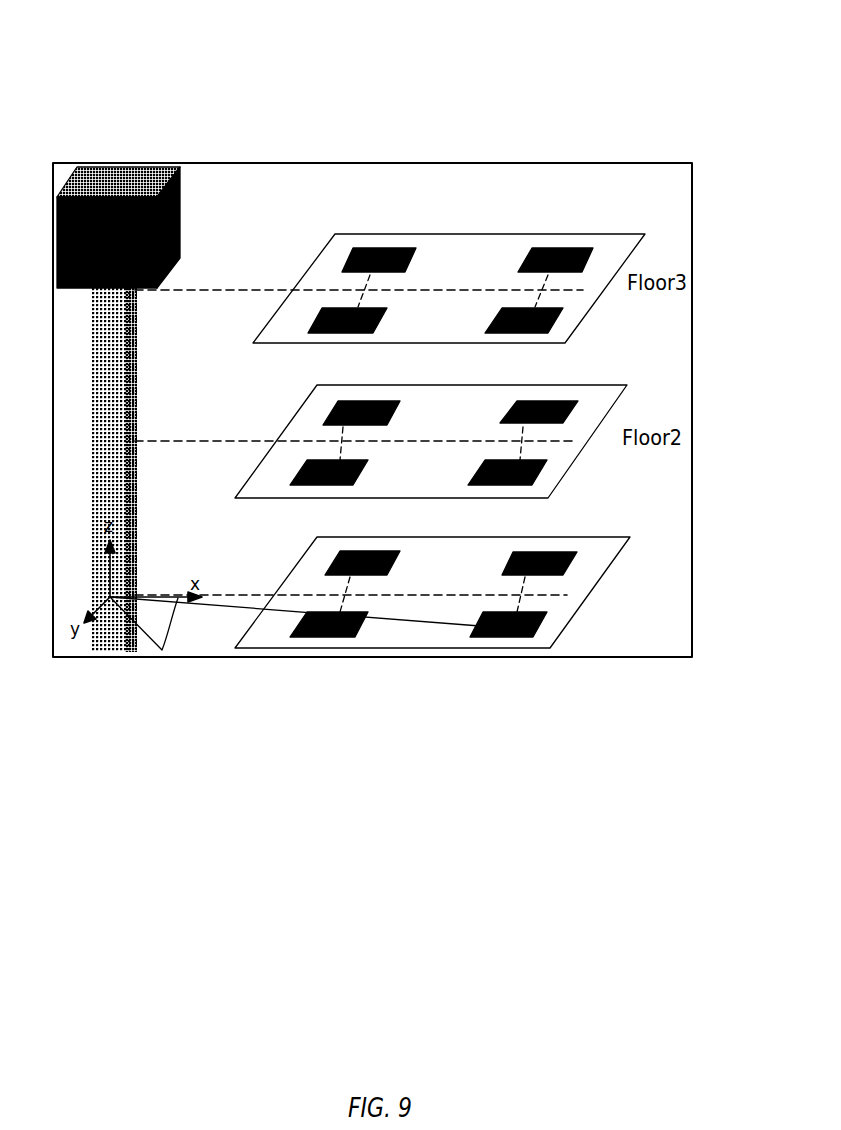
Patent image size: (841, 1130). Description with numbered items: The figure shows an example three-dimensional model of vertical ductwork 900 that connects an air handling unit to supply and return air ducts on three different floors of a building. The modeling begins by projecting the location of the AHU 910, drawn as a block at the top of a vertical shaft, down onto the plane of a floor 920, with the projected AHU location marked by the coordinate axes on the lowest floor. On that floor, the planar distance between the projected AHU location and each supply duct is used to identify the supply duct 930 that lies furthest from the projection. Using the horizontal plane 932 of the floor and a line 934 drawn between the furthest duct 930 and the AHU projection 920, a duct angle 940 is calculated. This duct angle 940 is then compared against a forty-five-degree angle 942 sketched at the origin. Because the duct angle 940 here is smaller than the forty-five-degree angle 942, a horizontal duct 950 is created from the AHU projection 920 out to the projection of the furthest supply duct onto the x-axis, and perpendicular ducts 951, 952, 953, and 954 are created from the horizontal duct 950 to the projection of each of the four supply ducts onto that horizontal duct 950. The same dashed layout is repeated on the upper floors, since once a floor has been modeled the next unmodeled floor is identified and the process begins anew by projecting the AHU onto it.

The three-dimensional model of vertical ductwork 900 is at (657, 42).
The AHU 910 is at (53, 242).
The floor plane / AHU projection 920 is at (105, 478).
The furthest supply duct 930 is at (517, 633).
The horizontal plane 932 is at (482, 648).
The line 934 is at (438, 620).
The duct angle 940 is at (403, 598).
The 45-degree angle 942 is at (178, 598).
The horizontal duct 950 is at (265, 595).
The perpendicular duct 951 is at (348, 613).
The perpendicular duct 952 is at (350, 577).
The perpendicular duct 953 is at (528, 577).
The perpendicular duct 954 is at (532, 583).